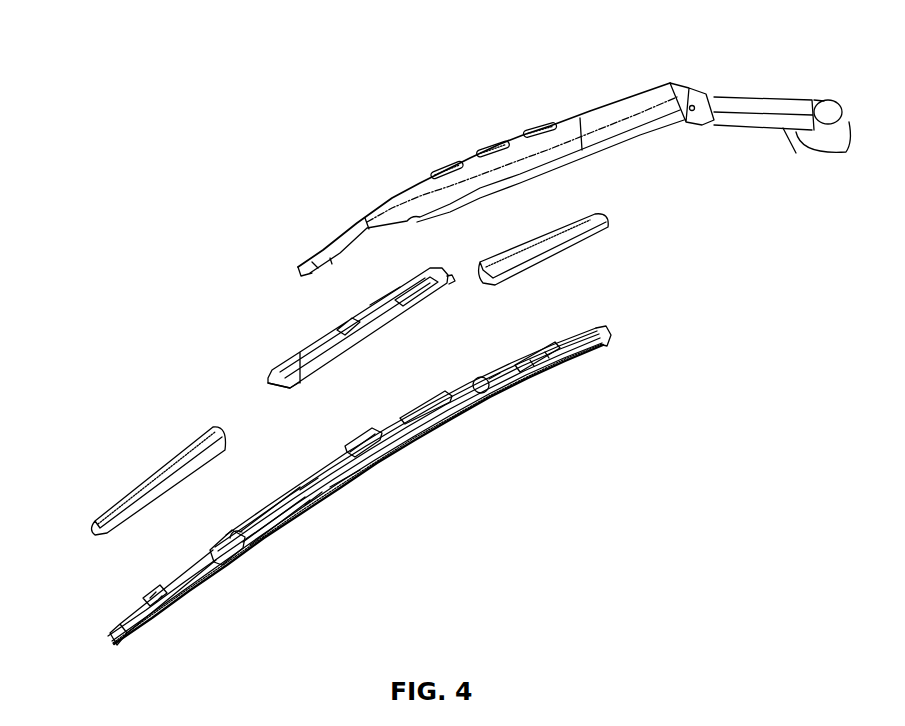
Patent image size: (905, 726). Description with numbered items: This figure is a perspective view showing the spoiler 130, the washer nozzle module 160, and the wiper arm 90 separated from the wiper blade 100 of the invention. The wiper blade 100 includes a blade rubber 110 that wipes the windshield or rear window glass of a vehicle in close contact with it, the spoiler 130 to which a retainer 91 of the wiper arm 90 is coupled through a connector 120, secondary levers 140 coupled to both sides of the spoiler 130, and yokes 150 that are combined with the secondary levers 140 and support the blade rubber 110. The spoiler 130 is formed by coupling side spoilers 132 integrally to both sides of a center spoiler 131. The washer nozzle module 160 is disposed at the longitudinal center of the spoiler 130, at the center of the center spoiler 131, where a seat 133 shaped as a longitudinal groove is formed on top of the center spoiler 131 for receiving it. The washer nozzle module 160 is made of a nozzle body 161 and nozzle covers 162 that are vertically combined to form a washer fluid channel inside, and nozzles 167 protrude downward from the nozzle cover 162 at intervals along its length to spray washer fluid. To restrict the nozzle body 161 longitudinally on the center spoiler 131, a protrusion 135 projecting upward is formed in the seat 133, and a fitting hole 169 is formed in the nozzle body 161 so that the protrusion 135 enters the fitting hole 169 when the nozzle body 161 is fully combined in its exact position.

The wiper arm 90 is at (622, 90).
The retainer 91 is at (392, 205).
The wiper blade 100 is at (319, 485).
The blade rubber 110 is at (180, 593).
The connector 120 is at (388, 457).
The spoiler 130 is at (413, 447).
The center spoiler 131 is at (270, 502).
The side spoiler 132 is at (587, 228).
The seat 133 is at (310, 497).
The protrusion 135 is at (402, 408).
The secondary lever 140 is at (205, 552).
The yoke 150 is at (142, 600).
The washer nozzle module 160 is at (361, 324).
The nozzle body 161 is at (297, 377).
The nozzle cover 162 is at (330, 457).
The nozzle 167 is at (355, 488).
The fitting hole 169 is at (383, 297).